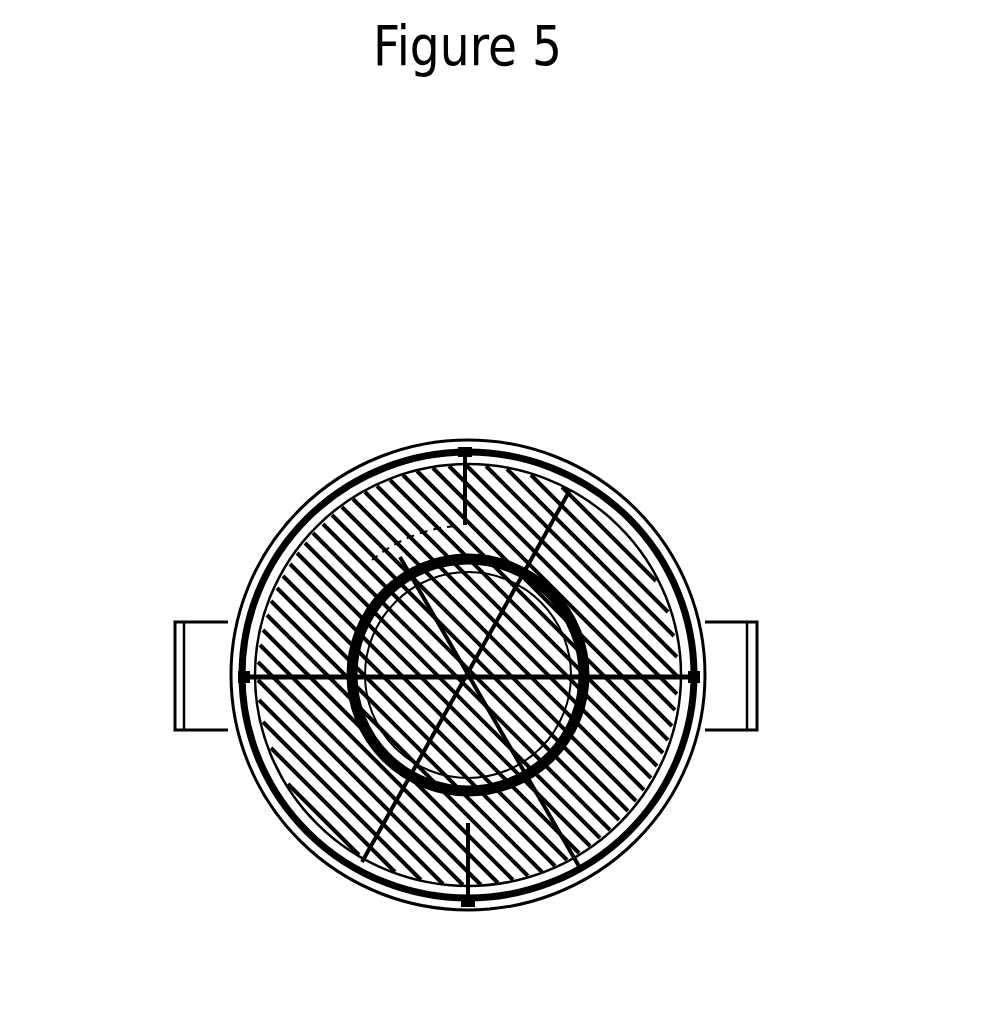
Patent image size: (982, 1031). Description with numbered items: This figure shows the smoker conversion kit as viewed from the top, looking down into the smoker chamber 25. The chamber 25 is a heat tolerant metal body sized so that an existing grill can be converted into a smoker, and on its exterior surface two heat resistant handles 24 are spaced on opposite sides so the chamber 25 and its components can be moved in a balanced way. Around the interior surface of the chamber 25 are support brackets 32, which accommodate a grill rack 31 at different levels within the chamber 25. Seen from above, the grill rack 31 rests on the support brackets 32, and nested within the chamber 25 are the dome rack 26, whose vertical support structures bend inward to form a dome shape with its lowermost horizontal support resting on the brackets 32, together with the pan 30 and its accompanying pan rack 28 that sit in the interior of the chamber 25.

The heat resistant handles 24 is at (175, 670).
The smoker chamber 25 is at (296, 508).
The dome rack 26 is at (648, 665).
The pan rack 28 is at (465, 848).
The pan 30 is at (340, 603).
The grill rack 31 is at (500, 450).
The support brackets 32 is at (464, 450).